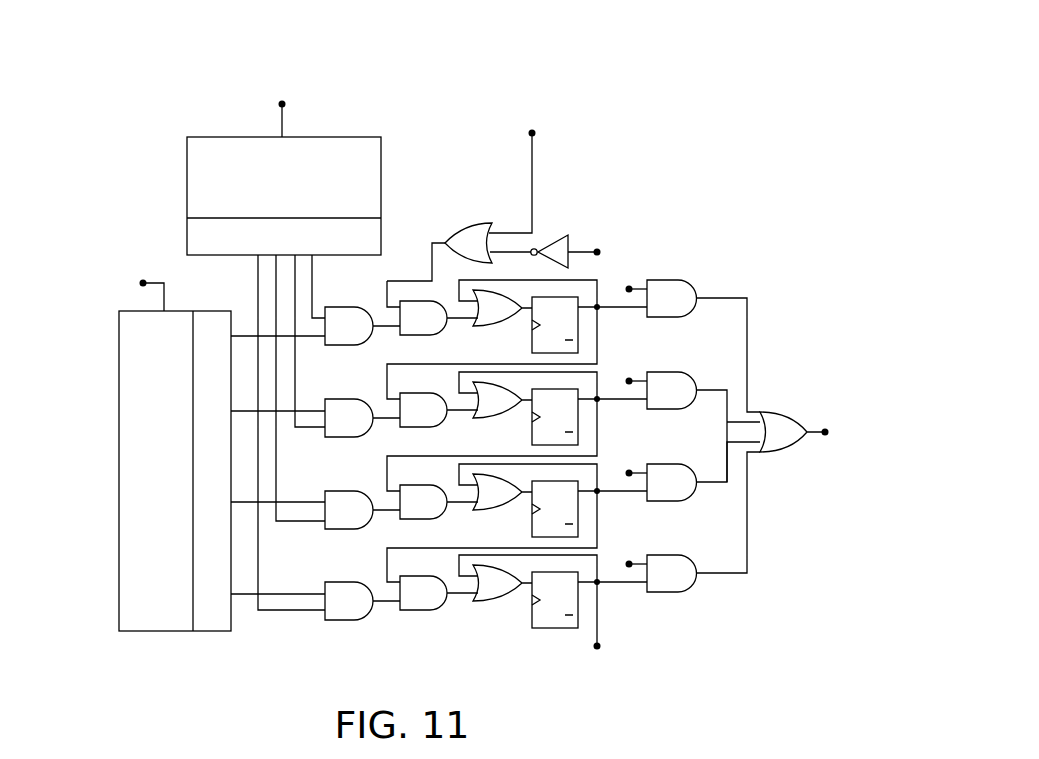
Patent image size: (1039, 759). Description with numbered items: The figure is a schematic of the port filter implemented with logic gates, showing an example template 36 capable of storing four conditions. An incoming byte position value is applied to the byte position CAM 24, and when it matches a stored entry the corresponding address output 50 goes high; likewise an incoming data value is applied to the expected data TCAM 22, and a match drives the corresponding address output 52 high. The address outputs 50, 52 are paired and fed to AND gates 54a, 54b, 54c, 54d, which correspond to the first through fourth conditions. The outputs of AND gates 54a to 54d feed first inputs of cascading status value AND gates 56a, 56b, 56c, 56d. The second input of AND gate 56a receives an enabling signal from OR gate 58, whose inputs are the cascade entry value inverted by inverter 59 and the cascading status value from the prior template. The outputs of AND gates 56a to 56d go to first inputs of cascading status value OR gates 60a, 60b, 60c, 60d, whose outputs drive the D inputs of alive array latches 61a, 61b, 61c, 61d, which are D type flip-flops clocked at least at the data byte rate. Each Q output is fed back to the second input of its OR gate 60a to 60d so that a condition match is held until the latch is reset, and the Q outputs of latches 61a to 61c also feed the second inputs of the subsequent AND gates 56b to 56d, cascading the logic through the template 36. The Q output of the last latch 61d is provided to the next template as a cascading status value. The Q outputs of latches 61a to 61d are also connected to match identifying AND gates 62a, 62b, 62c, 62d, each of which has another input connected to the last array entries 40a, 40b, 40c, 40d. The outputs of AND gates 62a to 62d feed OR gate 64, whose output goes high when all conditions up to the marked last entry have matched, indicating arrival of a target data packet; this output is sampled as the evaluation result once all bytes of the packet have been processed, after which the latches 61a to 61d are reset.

The expected data TCAM 22 is at (178, 322).
The byte position CAM 24 is at (200, 165).
The template 36 is at (626, 162).
The last array entry 40a is at (626, 278).
The last array entry 40b is at (626, 370).
The last array entry 40c is at (626, 462).
The last array entry 40d is at (626, 553).
The address output of the byte position CAM 50 is at (189, 229).
The address output of the expected data TCAM 52 is at (212, 625).
The AND gate 54a is at (331, 336).
The AND gate 54b is at (362, 418).
The AND gate 54c is at (362, 510).
The AND gate 54d is at (362, 601).
The cascading status value AND gate 56a is at (405, 328).
The cascading status value AND gate 56b is at (439, 410).
The cascading status value AND gate 56c is at (439, 502).
The cascading status value AND gate 56d is at (439, 593).
The OR gate 58 is at (462, 253).
The inverter 59 is at (560, 249).
The cascading status value OR gate 60a is at (528, 303).
The cascading status value OR gate 60b is at (528, 395).
The cascading status value OR gate 60c is at (528, 487).
The cascading status value OR gate 60d is at (528, 578).
The alive array latch 61a is at (532, 338).
The alive array latch 61b is at (552, 418).
The alive array latch 61c is at (552, 510).
The alive array latch 61d is at (552, 601).
The match identifying AND gate 62a is at (653, 307).
The match identifying AND gate 62b is at (703, 427).
The match identifying AND gate 62c is at (703, 471).
The match identifying AND gate 62d is at (703, 522).
The OR gate 64 is at (779, 443).